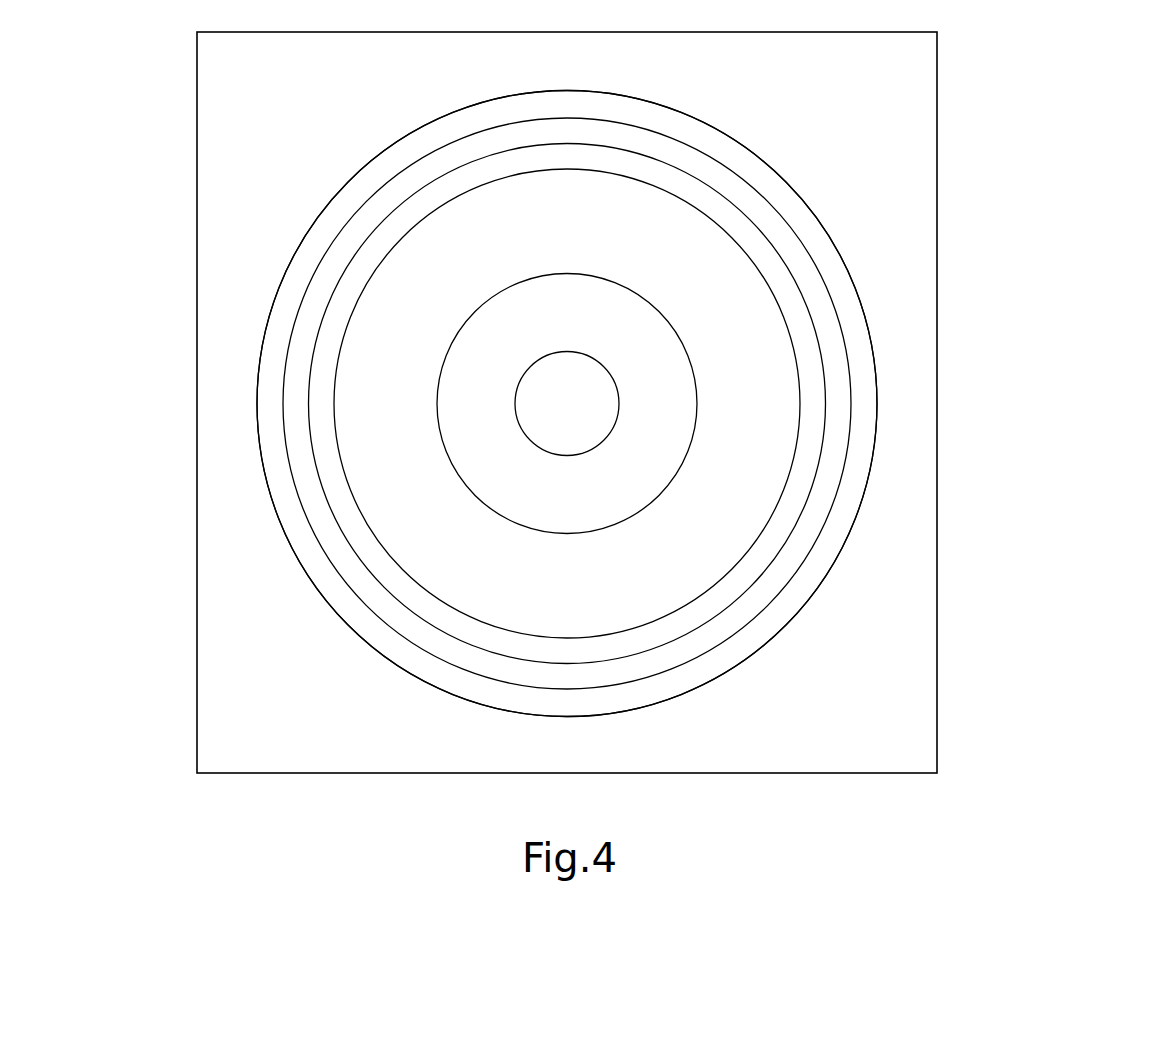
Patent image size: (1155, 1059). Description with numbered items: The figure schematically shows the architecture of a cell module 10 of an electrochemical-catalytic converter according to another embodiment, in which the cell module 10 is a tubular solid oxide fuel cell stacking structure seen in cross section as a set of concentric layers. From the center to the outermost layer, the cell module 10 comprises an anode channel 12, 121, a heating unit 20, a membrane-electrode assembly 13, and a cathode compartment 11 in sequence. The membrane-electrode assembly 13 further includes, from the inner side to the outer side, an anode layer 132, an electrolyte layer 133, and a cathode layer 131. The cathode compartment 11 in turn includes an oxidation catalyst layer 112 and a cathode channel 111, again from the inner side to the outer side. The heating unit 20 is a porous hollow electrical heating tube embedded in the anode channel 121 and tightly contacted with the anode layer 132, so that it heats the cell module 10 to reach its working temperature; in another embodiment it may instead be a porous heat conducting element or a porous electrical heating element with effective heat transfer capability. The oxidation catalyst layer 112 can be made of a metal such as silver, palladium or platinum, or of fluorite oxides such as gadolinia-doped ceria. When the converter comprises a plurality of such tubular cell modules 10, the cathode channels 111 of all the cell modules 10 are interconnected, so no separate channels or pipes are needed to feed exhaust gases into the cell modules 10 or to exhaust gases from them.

The cell module 10 is at (937, 746).
The cathode compartment 11 is at (687, 404).
The cathode channel 111 is at (651, 404).
The oxidation catalyst layer 112 is at (652, 404).
The center electrode 12 is at (808, 253).
The anode channel 121 is at (567, 404).
The membrane-electrode assembly 13 is at (710, 403).
The cathode layer 131 is at (665, 403).
The anode layer 132 is at (690, 403).
The electrolyte layer 133 is at (813, 403).
The heating unit 20 is at (736, 332).